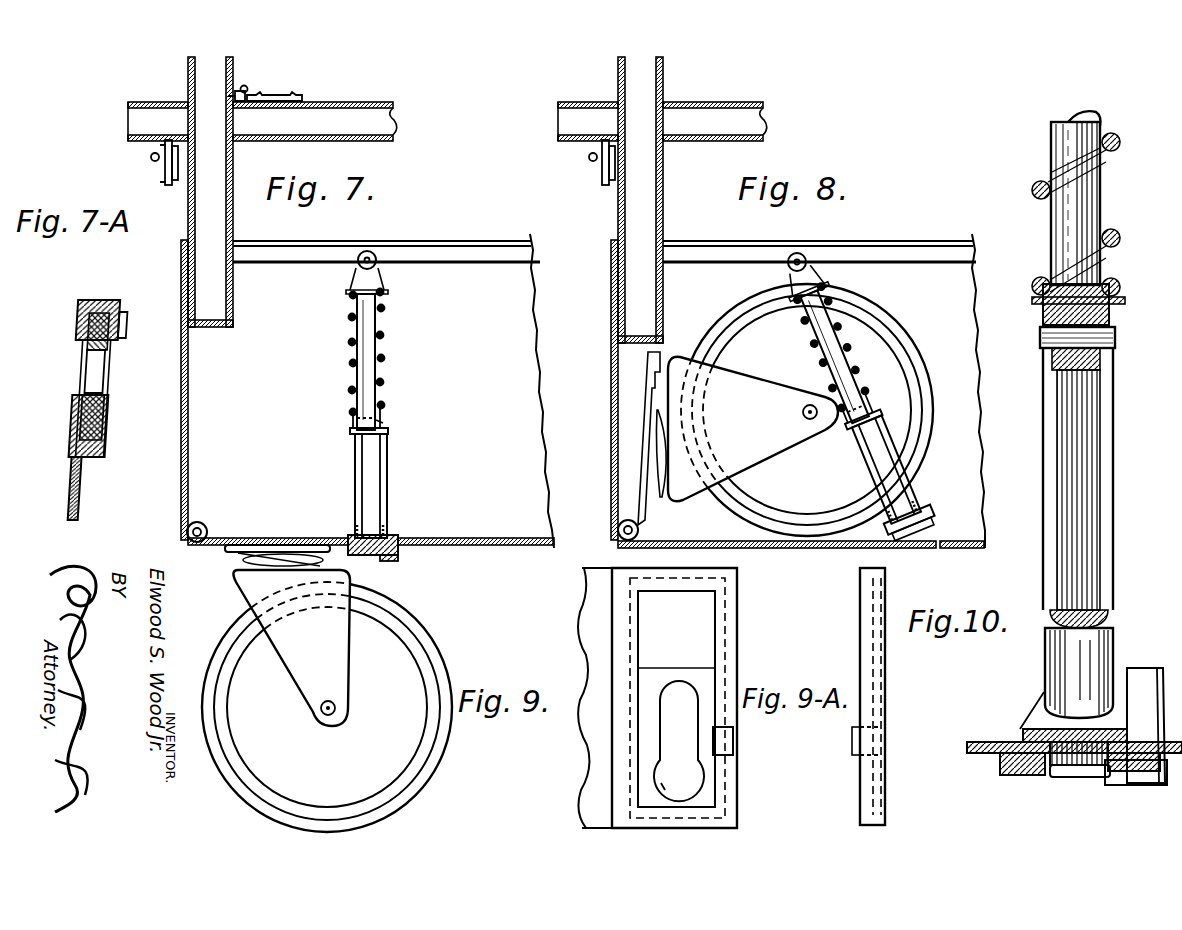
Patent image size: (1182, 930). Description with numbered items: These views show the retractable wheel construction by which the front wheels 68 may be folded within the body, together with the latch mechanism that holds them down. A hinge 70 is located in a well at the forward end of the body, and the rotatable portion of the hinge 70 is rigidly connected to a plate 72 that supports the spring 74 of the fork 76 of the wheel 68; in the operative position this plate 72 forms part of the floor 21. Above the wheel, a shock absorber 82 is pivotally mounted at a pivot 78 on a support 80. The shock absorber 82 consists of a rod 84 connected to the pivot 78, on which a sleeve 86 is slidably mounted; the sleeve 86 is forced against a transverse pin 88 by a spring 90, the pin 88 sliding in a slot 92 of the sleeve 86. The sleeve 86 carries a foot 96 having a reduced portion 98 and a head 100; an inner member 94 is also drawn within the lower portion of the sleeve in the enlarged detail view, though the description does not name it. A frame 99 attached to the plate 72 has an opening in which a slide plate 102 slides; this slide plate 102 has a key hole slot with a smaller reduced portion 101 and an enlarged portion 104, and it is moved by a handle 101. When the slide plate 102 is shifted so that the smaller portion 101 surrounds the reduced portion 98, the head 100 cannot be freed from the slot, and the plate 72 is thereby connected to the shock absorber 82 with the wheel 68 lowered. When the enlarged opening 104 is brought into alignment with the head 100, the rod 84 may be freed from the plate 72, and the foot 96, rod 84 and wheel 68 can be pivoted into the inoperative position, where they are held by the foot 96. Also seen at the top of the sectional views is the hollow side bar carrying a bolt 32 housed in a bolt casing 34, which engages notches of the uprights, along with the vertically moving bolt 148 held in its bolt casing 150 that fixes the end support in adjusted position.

In FIG. 7, the floor 21 is at (490, 548).
In FIG. 7, the bolt 32 is at (160, 125).
In FIG. 8, the bolt 32 is at (600, 125).
In FIG. 7, the bolt casing 34 is at (166, 183).
In FIG. 8, the bolt casing 34 is at (603, 183).
In FIG. 7, the vertically moving bolt 148 is at (242, 93).
In FIG. 7, the bolt casing 150 is at (300, 97).
In FIG. 7, the front wheel 68 is at (414, 646).
In FIG. 8, the front wheel 68 is at (912, 378).
In FIG. 7, the hinge 70 is at (197, 542).
In FIG. 8, the hinge 70 is at (618, 532).
In FIG. 7A, the plate 72 is at (76, 478).
In FIG. 7, the plate 72 is at (275, 540).
In FIG. 8, the plate 72 is at (648, 400).
In FIG. 9, the plate 72 is at (657, 698).
In FIG. 10, the plate 72 is at (1000, 727).
In FIG. 7, the spring 74 is at (252, 548).
In FIG. 8, the spring 74 is at (657, 455).
In FIG. 7, the fork 76 is at (327, 701).
In FIG. 8, the fork 76 is at (800, 410).
In FIG. 7, the pivot 78 is at (372, 253).
In FIG. 8, the pivot 78 is at (804, 254).
In FIG. 7, the support 80 is at (458, 264).
In FIG. 8, the support 80 is at (735, 264).
In FIG. 7, the shock absorber 82 is at (384, 375).
In FIG. 8, the shock absorber 82 is at (814, 336).
In FIG. 10, the shock absorber 82 is at (1068, 224).
In FIG. 7, the rod 84 is at (376, 326).
In FIG. 8, the rod 84 is at (842, 345).
In FIG. 10, the rod 84 is at (1100, 205).
In FIG. 7, the sleeve 86 is at (352, 420).
In FIG. 8, the sleeve 86 is at (845, 428).
In FIG. 10, the sleeve 86 is at (1122, 300).
In FIG. 7, the transverse pin 88 is at (356, 436).
In FIG. 8, the transverse pin 88 is at (870, 413).
In FIG. 10, the transverse pin 88 is at (1116, 340).
In FIG. 7, the spring 90 is at (352, 362).
In FIG. 8, the spring 90 is at (856, 360).
In FIG. 10, the spring 90 is at (1120, 238).
In FIG. 7, the slot 92 is at (387, 488).
In FIG. 8, the slot 92 is at (872, 470).
In FIG. 10, the slot 92 is at (1112, 486).
In FIG. 9, the inner rod 94 is at (735, 742).
In FIG. 10, the inner rod 94 is at (1066, 486).
In FIG. 7, the foot 96 is at (390, 530).
In FIG. 8, the foot 96 is at (908, 512).
In FIG. 10, the foot 96 is at (1122, 690).
In FIG. 9, the reduced portion 98 is at (694, 705).
In FIG. 10, the reduced portion 98 is at (1060, 777).
In FIG. 9, the frame 99 is at (727, 608).
In FIG. 9A, the frame 99 is at (858, 610).
In FIG. 10, the frame 99 is at (1150, 688).
In FIG. 10, the head 100 is at (1085, 779).
In FIG. 7A, the reduced portion 101 is at (125, 322).
In FIG. 9, the reduced portion 101 is at (663, 712).
In FIG. 9A, the reduced portion 101 is at (854, 750).
In FIG. 10, the reduced portion 101 is at (1120, 785).
In FIG. 7A, the slide plate 102 is at (97, 402).
In FIG. 9, the slide plate 102 is at (655, 676).
In FIG. 10, the slide plate 102 is at (1020, 775).
In FIG. 9, the enlarged portion 104 is at (682, 776).